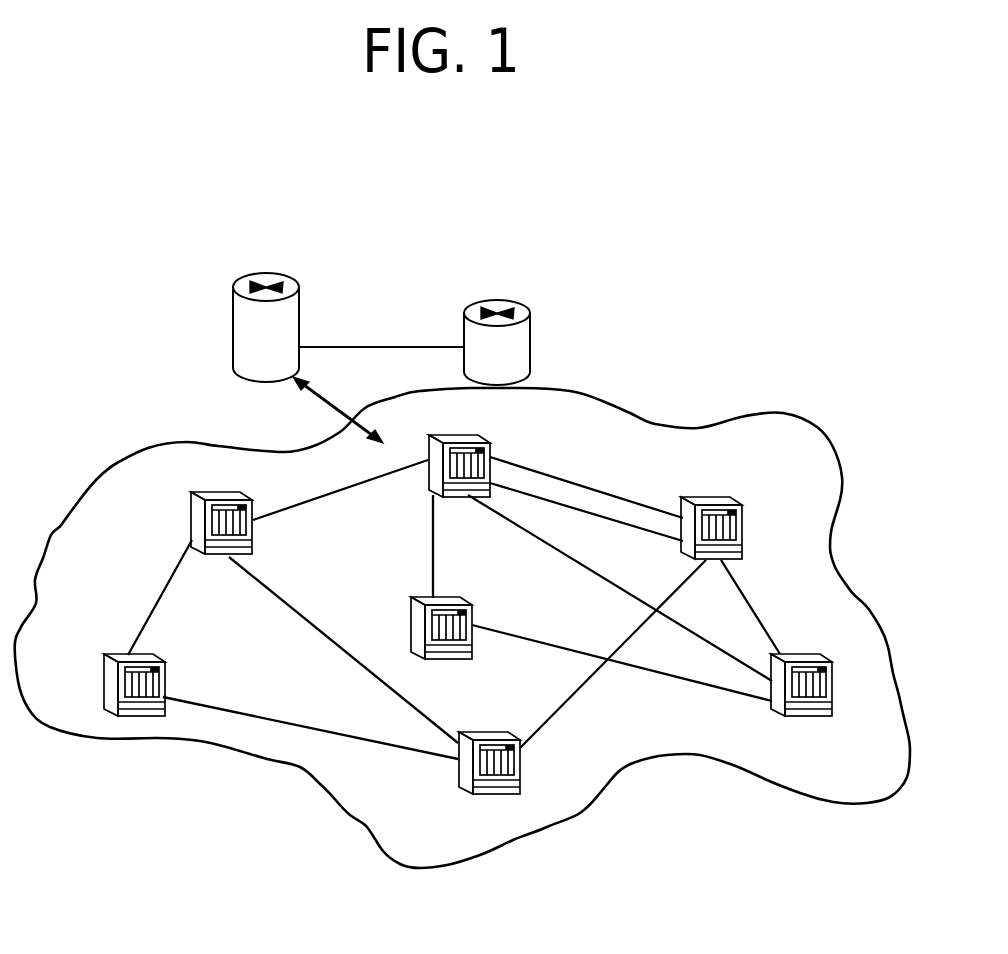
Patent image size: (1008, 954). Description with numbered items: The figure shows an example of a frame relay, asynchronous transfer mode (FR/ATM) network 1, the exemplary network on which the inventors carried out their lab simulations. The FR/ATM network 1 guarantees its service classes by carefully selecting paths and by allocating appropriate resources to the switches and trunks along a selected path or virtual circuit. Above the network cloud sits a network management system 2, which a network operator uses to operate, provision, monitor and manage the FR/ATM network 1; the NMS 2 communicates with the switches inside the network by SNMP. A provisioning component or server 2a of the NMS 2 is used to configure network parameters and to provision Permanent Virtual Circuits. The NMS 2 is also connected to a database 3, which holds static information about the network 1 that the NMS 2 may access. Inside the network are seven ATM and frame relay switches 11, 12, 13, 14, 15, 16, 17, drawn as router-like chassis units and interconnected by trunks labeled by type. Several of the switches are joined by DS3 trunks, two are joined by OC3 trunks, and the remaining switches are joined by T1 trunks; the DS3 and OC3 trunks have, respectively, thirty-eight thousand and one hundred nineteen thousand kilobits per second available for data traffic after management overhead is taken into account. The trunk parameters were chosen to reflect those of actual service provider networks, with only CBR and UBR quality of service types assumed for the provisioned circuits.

The FR/ATM network 1 is at (678, 340).
The network management system 2 is at (266, 273).
The provisioning component or server 2a is at (252, 353).
The database 3 is at (483, 298).
The ATM and FR switch 11 is at (103, 678).
The ATM and FR switch 12 is at (222, 493).
The ATM and FR switch 13 is at (470, 435).
The ATM and FR switch 14 is at (718, 498).
The ATM and FR switch 15 is at (812, 717).
The ATM and FR switch 16 is at (497, 793).
The ATM and FR switch 17 is at (441, 598).